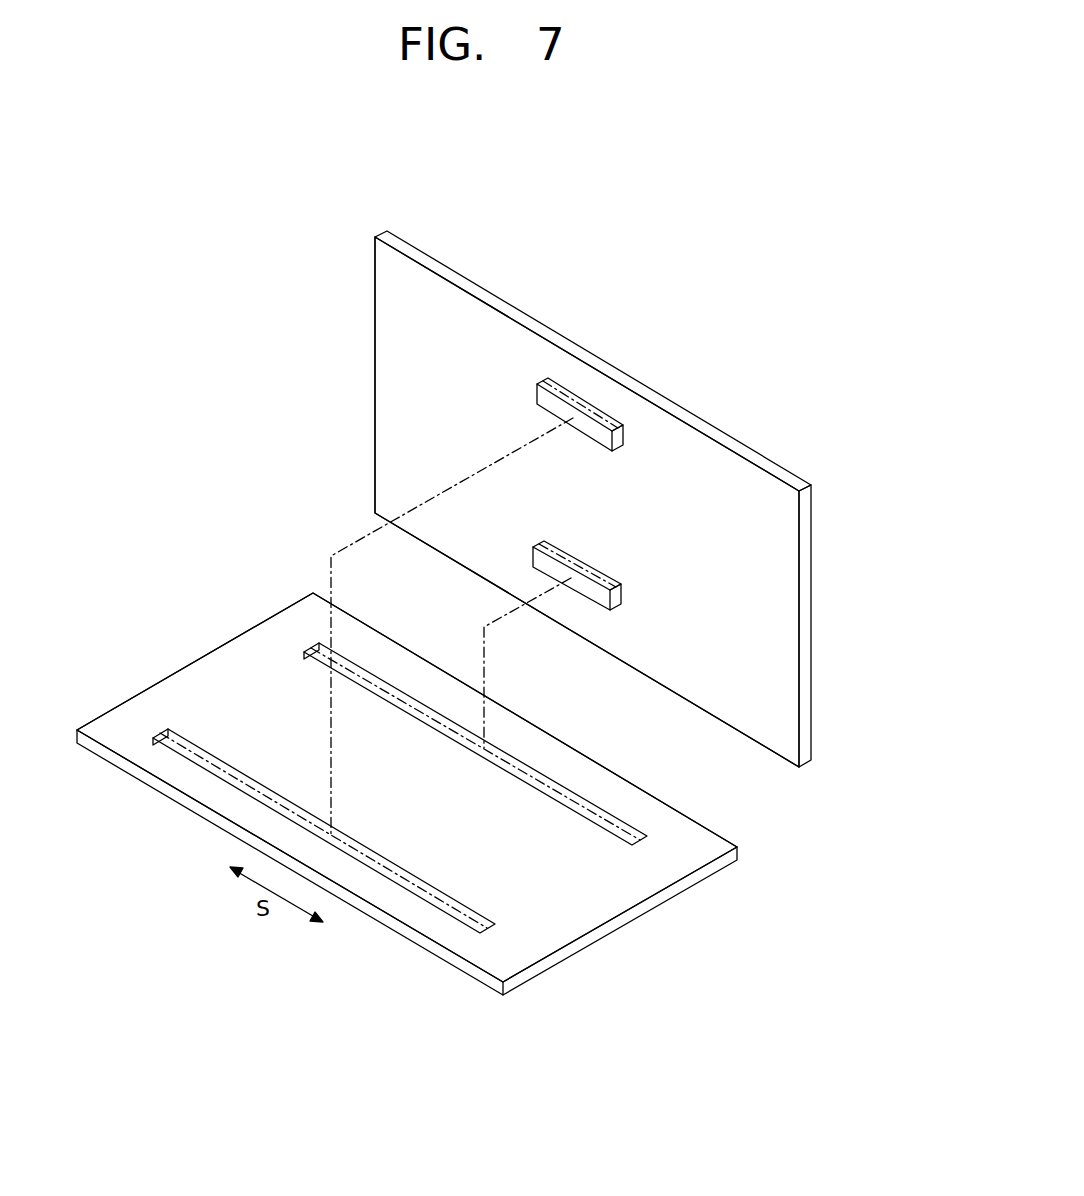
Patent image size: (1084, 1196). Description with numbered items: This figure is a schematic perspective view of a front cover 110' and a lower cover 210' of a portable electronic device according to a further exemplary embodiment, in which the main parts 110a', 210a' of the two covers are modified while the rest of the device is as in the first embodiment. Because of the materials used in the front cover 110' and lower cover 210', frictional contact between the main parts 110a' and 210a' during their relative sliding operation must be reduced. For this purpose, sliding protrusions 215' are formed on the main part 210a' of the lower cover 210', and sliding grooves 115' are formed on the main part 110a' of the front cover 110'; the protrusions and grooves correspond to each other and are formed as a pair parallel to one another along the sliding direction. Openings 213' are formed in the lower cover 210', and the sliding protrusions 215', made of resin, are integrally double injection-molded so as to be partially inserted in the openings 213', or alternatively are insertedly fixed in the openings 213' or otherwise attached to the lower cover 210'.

The front cover 110' is at (407, 795).
The main part of the front cover 110a' is at (415, 787).
The sliding grooves 115' is at (508, 788).
The lower cover 210' is at (653, 499).
The main part of the lower cover 210a' is at (648, 502).
The openings 213' is at (532, 607).
The sliding protrusions 215' is at (613, 475).